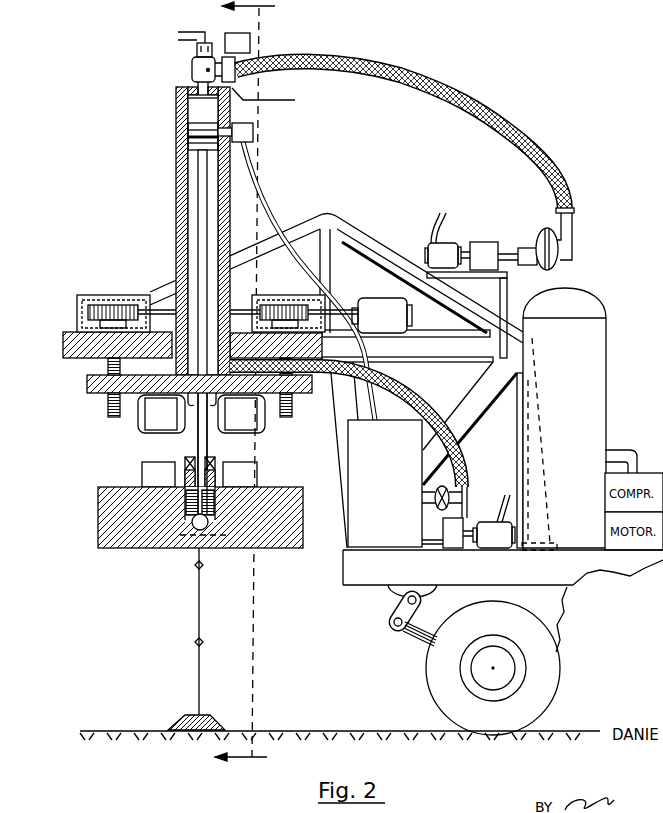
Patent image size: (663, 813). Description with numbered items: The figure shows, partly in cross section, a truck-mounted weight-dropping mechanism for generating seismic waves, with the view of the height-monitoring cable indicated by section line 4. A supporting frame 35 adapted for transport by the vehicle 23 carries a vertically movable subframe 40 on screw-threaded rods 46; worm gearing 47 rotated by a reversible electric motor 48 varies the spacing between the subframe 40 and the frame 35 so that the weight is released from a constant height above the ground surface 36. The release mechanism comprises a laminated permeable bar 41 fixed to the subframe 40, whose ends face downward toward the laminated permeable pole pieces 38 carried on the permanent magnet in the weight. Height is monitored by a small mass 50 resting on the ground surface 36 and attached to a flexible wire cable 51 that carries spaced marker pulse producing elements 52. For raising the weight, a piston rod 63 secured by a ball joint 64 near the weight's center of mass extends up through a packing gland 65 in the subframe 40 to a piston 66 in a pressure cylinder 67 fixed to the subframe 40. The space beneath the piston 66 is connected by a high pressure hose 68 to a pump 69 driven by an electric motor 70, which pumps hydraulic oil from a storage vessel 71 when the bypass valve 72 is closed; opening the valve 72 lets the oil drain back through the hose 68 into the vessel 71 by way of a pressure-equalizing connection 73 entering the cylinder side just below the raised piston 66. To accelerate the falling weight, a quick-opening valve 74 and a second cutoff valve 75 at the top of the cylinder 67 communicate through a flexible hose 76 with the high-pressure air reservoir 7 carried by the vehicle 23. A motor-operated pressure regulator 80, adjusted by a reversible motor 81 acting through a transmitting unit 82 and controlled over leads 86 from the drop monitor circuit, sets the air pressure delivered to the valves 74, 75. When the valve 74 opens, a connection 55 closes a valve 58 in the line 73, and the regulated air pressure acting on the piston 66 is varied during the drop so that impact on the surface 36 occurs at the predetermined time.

The section line 4- 4 is at (252, 384).
The high-pressure air reservoir 7 is at (600, 367).
The vehicle 23 is at (343, 573).
The supporting frame 35 is at (333, 225).
The ground surface 36 is at (266, 731).
The pole pieces 38 is at (142, 474).
The subframe 40 is at (87, 387).
The laminated permeable bar 41 is at (152, 427).
The screw-threaded rods 46 is at (108, 410).
The worm gearing 47 is at (100, 310).
The reversible electric motor 48 is at (388, 300).
The small mass 50 is at (183, 716).
The flexible wire cable 51 is at (197, 597).
The marker pulse producing elements 52 is at (197, 565).
The connection 55 is at (274, 99).
The valve 58 is at (253, 132).
The piston rod 63 is at (203, 238).
The ball joint 64 is at (192, 522).
The packing gland 65 is at (190, 405).
The piston 66 is at (176, 136).
The pressure cylinder 67 is at (176, 203).
The high pressure hose 68 is at (417, 384).
The pump 69 is at (466, 510).
The electric motor 70 is at (503, 542).
The storage vessel 71 is at (365, 523).
The bypass valve 72 is at (455, 482).
The pressure-equalizing connection 73 is at (263, 200).
The quick-opening valve 74 is at (192, 68).
The second cutoff valve 75 is at (237, 60).
The flexible hose 76 is at (575, 165).
The pressure regulator 80 is at (540, 235).
The motor 81 is at (449, 242).
The transmitting unit 82 is at (486, 241).
The leads 86 is at (430, 222).